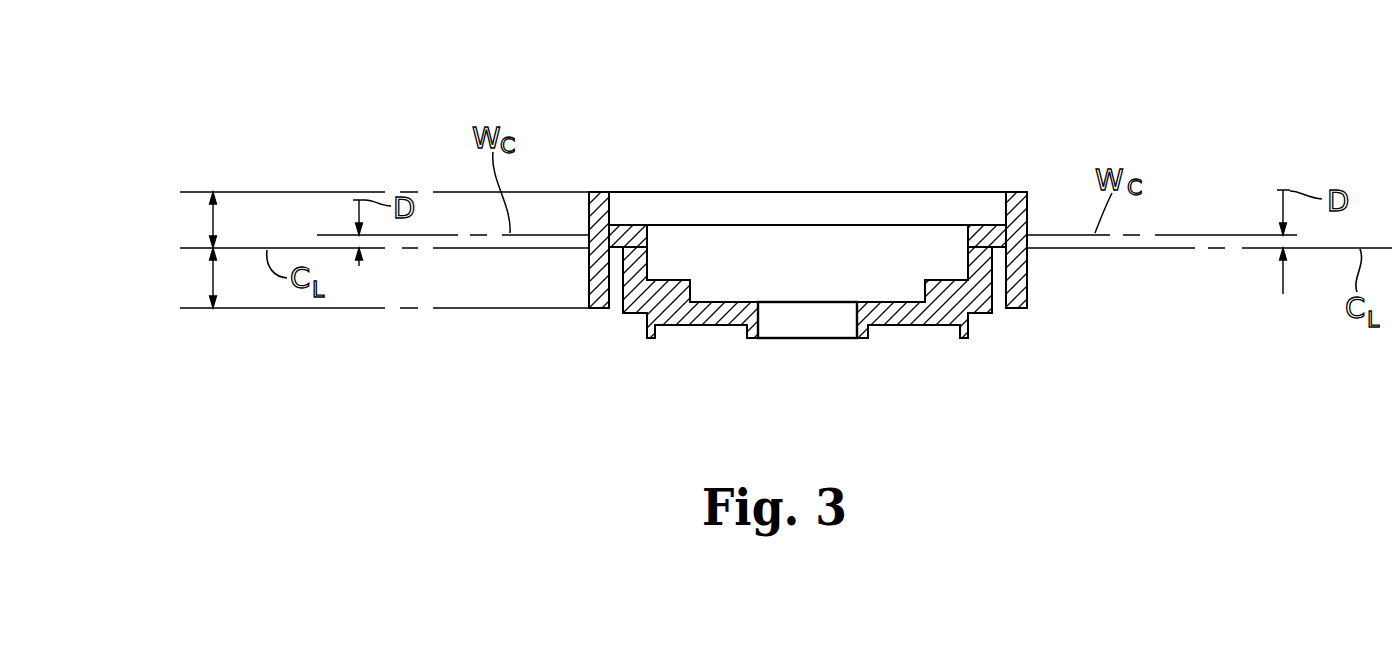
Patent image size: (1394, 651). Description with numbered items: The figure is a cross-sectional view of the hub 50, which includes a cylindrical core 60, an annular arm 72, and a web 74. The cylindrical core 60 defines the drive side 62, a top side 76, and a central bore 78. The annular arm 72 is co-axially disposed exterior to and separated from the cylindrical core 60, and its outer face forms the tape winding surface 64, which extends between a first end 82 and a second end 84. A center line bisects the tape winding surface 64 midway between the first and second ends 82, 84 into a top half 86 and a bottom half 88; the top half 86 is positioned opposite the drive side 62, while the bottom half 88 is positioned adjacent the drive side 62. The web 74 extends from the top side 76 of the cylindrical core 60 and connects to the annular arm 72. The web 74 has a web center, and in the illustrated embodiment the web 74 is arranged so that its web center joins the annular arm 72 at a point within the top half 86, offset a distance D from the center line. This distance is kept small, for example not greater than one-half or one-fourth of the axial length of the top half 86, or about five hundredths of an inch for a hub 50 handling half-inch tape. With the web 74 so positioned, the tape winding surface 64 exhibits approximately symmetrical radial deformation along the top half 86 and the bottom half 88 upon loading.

The hub 50 is at (751, 105).
The cylindrical core 60 is at (807, 296).
The drive side 62 is at (692, 326).
The tape winding surface 64 is at (588, 270).
The annular arm 72 is at (603, 190).
The web 74 is at (627, 235).
The top side 76 is at (657, 228).
The central bore 78 is at (790, 340).
The first end 82 is at (591, 190).
The second end 84 is at (594, 310).
The top half 86 is at (212, 220).
The bottom half 88 is at (212, 276).